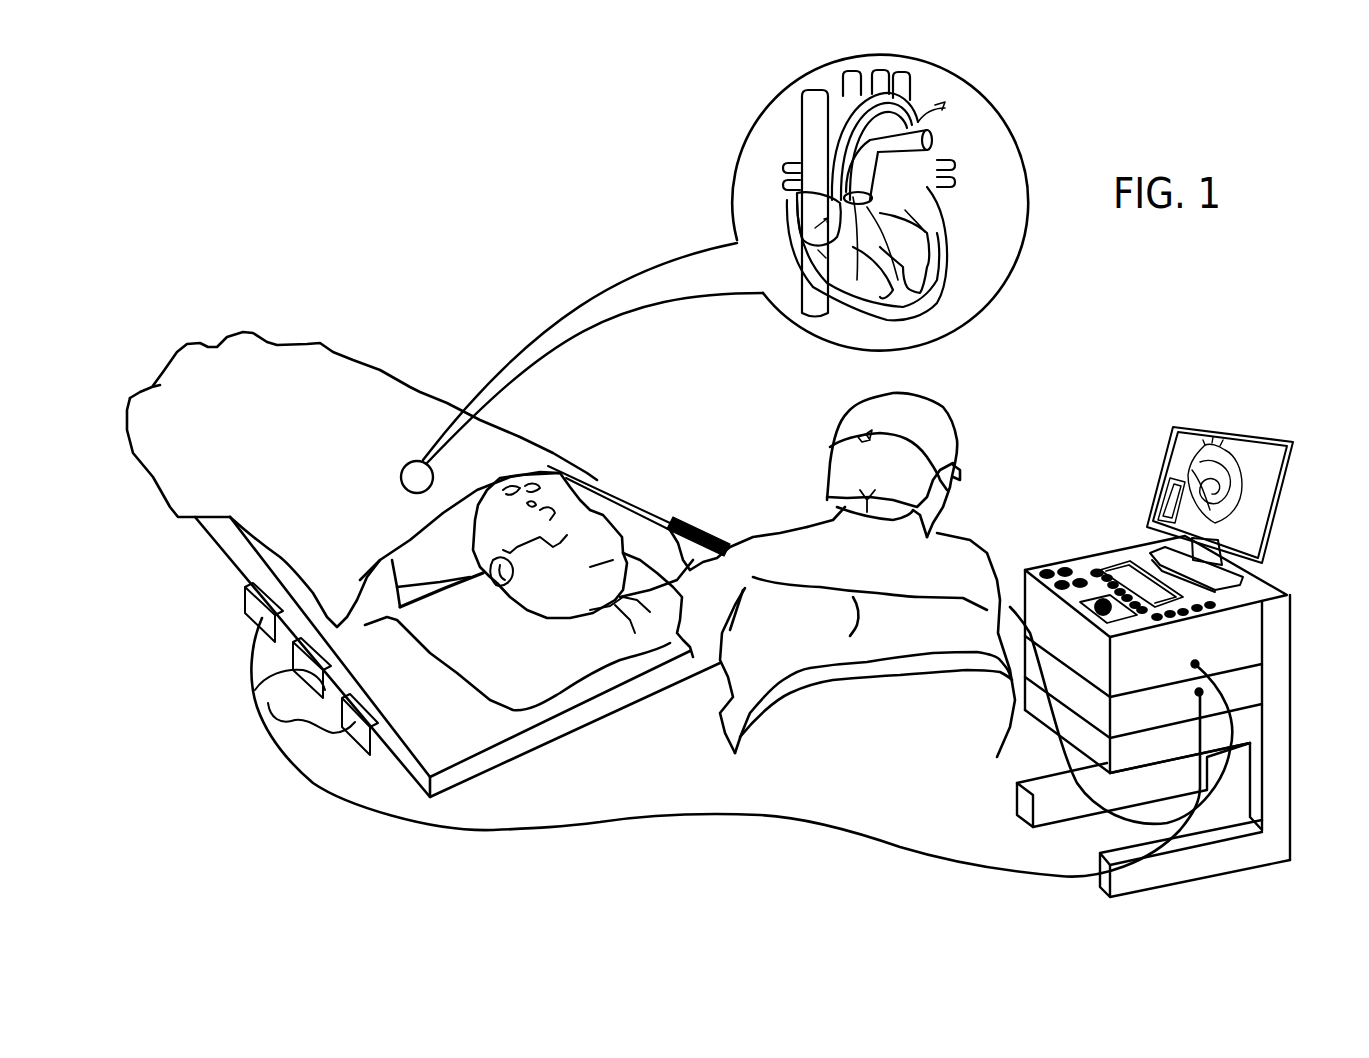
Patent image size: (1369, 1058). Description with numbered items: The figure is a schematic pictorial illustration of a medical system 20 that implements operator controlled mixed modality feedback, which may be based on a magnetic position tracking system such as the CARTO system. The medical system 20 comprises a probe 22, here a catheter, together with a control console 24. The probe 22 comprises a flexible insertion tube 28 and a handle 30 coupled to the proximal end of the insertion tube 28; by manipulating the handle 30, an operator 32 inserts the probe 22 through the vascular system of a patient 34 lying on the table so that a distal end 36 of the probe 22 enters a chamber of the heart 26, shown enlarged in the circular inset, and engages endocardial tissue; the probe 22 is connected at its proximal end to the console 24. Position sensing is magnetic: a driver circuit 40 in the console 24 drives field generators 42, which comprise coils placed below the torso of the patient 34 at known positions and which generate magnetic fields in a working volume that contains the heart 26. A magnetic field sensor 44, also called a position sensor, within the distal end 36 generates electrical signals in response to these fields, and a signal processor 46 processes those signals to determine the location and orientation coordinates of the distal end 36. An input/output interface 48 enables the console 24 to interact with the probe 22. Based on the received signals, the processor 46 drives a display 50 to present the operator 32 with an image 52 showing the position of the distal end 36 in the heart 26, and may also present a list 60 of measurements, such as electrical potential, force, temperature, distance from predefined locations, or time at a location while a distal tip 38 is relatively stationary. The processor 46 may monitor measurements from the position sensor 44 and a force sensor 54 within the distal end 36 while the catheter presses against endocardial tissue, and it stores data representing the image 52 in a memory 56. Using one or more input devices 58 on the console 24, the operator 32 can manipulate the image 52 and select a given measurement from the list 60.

The medical system 20 is at (1098, 353).
The probe 22 is at (645, 481).
The control console 24 is at (1188, 662).
The heart 26 is at (943, 275).
The flexible insertion tube 28 is at (628, 512).
The handle 30 is at (670, 523).
The operator 32 is at (742, 532).
The patient 34 is at (545, 618).
The distal end 36 is at (945, 108).
The distal tip 38 is at (945, 215).
The driver circuit 40 is at (1257, 618).
The field generators 42 is at (357, 743).
The magnetic field sensor 44 is at (857, 280).
The signal processor 46 is at (1257, 687).
The input/output interface 48 is at (1192, 662).
The display 50 is at (1218, 509).
The image 52 is at (1173, 467).
The force sensor 54 is at (898, 280).
The memory 56 is at (1257, 727).
The input devices 58 is at (1063, 570).
The list of measurements 60 is at (1157, 500).